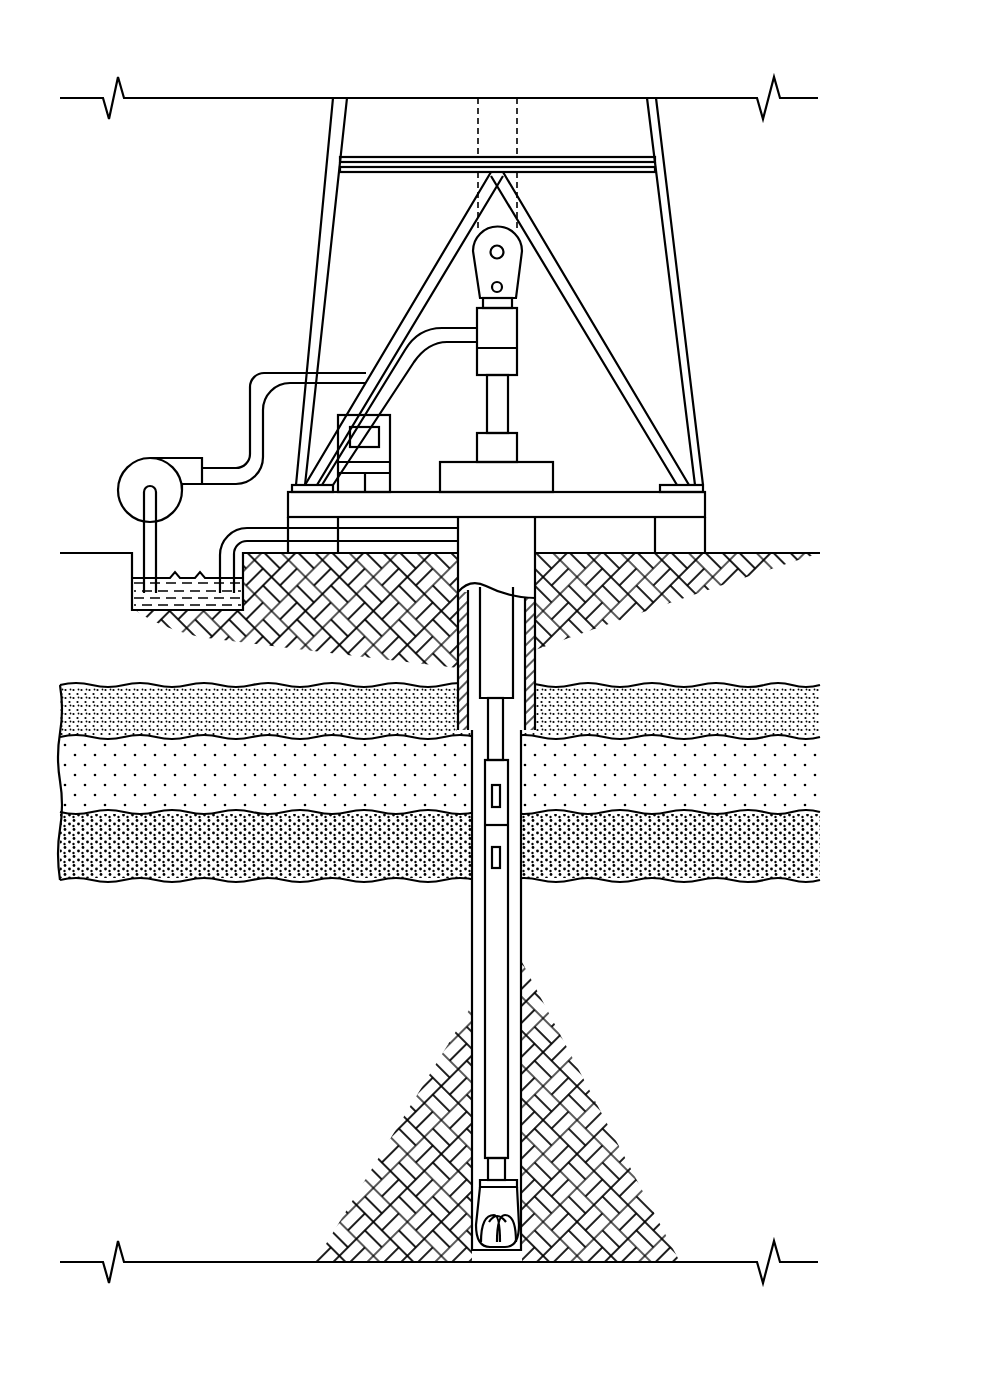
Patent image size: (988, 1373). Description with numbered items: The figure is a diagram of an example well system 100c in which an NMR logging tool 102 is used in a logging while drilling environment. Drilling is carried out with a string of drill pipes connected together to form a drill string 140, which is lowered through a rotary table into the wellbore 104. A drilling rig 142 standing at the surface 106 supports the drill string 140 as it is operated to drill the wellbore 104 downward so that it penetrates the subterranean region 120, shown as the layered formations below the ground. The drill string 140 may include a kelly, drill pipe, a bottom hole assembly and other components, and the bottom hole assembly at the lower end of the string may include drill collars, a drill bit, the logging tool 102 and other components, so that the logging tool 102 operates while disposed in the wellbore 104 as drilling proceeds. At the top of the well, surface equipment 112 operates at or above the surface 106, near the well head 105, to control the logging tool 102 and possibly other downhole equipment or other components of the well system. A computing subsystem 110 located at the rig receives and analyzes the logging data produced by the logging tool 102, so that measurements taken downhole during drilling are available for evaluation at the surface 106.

The well system 100c is at (132, 44).
The logging tool 102 is at (485, 957).
The wellbore 104 is at (470, 922).
The well head 105 is at (536, 462).
The surface 106 is at (746, 553).
The computing subsystem 110 is at (373, 414).
The surface equipment 112 is at (718, 268).
The subterranean region 120 is at (665, 668).
The drill string 140 is at (488, 743).
The drilling rig 142 is at (178, 270).